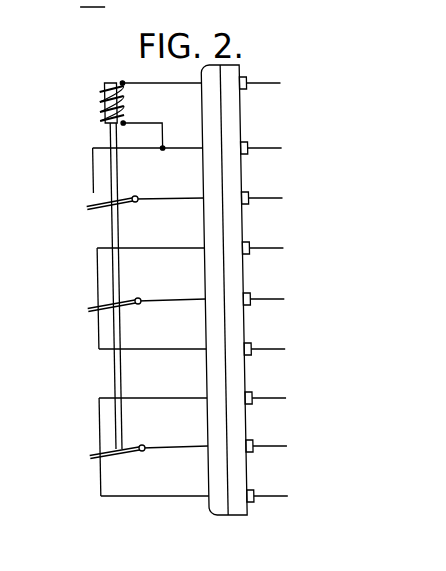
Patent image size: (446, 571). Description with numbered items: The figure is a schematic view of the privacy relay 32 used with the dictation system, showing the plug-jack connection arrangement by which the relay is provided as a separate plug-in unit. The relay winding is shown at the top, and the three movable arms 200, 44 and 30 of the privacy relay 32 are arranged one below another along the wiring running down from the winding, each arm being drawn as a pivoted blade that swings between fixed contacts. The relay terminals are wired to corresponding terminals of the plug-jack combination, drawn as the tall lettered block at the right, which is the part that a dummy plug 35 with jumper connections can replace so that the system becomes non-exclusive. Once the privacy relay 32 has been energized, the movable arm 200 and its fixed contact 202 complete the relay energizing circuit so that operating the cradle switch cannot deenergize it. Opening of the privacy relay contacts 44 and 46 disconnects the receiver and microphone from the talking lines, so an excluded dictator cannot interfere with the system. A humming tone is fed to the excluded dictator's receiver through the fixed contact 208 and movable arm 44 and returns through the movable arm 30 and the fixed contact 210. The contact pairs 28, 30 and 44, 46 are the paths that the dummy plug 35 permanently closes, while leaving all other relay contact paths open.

The privacy relay 32 is at (97, 80).
The dummy plug 35 is at (238, 270).
The fixed contact 202 is at (90, 195).
The movable arm 200 is at (121, 204).
The fixed contact 208 is at (93, 297).
The privacy relay contact 46 is at (93, 313).
The movable arm 44 is at (123, 306).
The fixed contact 210 is at (94, 445).
The privacy relay contact 28 is at (95, 460).
The movable arm 30 is at (121, 453).